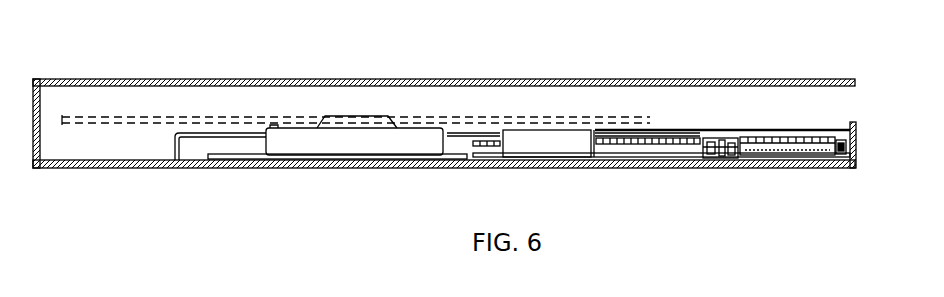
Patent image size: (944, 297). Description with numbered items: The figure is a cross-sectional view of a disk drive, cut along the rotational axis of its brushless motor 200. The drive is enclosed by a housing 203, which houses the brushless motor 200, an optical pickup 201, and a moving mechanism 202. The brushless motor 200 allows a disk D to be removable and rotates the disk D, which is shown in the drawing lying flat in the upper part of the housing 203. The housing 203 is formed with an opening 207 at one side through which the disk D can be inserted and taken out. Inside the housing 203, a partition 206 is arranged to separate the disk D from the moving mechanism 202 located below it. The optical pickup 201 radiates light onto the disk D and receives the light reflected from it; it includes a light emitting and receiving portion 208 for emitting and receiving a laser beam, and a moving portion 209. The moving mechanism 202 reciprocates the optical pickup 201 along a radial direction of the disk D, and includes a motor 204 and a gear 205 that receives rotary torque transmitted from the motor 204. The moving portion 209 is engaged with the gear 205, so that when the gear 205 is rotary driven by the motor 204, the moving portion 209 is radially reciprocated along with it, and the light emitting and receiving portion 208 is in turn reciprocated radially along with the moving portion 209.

The brushless motor 200 is at (398, 147).
The optical pickup 201 is at (566, 145).
The moving mechanism 202 is at (786, 130).
The housing 203 is at (511, 79).
The motor 204 is at (767, 150).
The gear 205 is at (710, 150).
The partition 206 is at (663, 133).
The opening 207 is at (853, 122).
The light emitting and receiving portion 208 is at (513, 147).
The moving portion 209 is at (640, 150).
The disk D is at (134, 117).